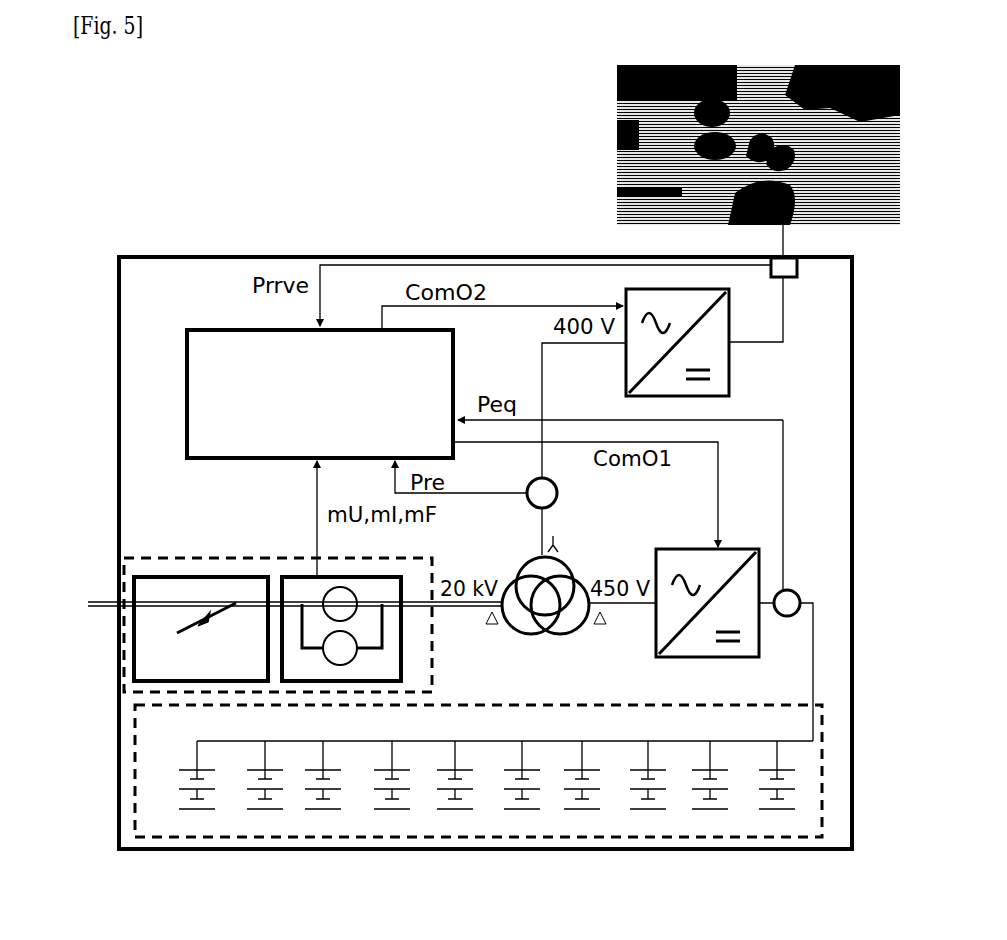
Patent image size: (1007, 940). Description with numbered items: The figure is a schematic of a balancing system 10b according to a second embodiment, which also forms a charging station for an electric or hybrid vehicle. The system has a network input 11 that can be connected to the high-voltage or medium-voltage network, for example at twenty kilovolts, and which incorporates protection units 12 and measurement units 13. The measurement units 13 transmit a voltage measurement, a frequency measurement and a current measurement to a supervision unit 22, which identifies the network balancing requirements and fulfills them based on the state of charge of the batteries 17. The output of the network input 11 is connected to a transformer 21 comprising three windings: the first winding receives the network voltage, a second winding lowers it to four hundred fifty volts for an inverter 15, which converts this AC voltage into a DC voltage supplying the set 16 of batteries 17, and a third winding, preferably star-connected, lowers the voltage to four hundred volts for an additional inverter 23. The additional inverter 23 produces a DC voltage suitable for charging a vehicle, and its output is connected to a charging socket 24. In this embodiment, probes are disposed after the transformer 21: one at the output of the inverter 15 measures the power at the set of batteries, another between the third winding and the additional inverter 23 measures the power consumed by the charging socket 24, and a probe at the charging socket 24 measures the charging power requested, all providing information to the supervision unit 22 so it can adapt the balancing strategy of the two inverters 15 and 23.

The balancing system 10b is at (270, 255).
The network input 11 is at (148, 556).
The protection units 12 is at (201, 575).
The measurement units 13 is at (285, 575).
The inverter 15 is at (655, 648).
The set of batteries 16 is at (478, 817).
The batteries 17 is at (205, 810).
The transformer 21 is at (572, 540).
The supervision unit 22 is at (320, 394).
The additional inverter 23 is at (730, 355).
The charging socket 24 is at (797, 277).